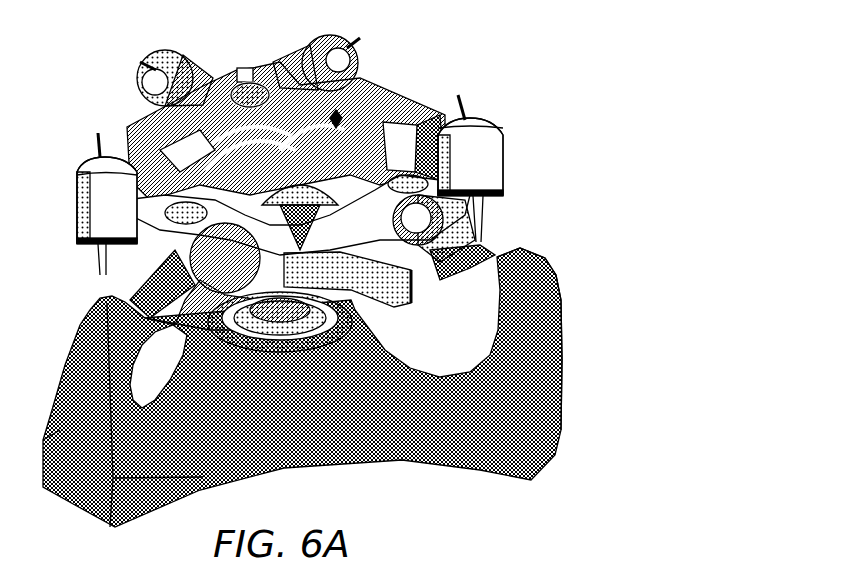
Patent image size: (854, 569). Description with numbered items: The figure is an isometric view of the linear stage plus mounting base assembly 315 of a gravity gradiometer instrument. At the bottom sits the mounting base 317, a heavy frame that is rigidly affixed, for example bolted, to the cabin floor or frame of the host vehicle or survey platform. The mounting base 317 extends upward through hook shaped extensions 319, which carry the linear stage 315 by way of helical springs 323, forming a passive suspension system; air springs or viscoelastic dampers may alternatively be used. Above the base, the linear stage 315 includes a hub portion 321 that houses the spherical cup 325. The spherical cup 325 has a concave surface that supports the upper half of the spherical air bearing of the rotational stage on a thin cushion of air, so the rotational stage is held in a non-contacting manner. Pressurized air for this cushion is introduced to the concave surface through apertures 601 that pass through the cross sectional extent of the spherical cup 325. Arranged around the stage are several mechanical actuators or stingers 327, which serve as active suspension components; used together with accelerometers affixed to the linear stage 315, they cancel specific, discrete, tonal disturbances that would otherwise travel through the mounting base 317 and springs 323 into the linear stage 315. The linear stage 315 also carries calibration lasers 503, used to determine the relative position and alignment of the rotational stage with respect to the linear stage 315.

The linear stage 315 is at (65, 107).
The mounting base 317 is at (424, 465).
The hook shaped extensions 319 is at (541, 265).
The hub portion 321 is at (394, 303).
The helical springs 323 is at (180, 267).
The spherical cup 325 is at (272, 70).
The mechanical actuators or stingers 327 is at (493, 147).
The calibration lasers 503 is at (417, 133).
The apertures 601 is at (344, 112).